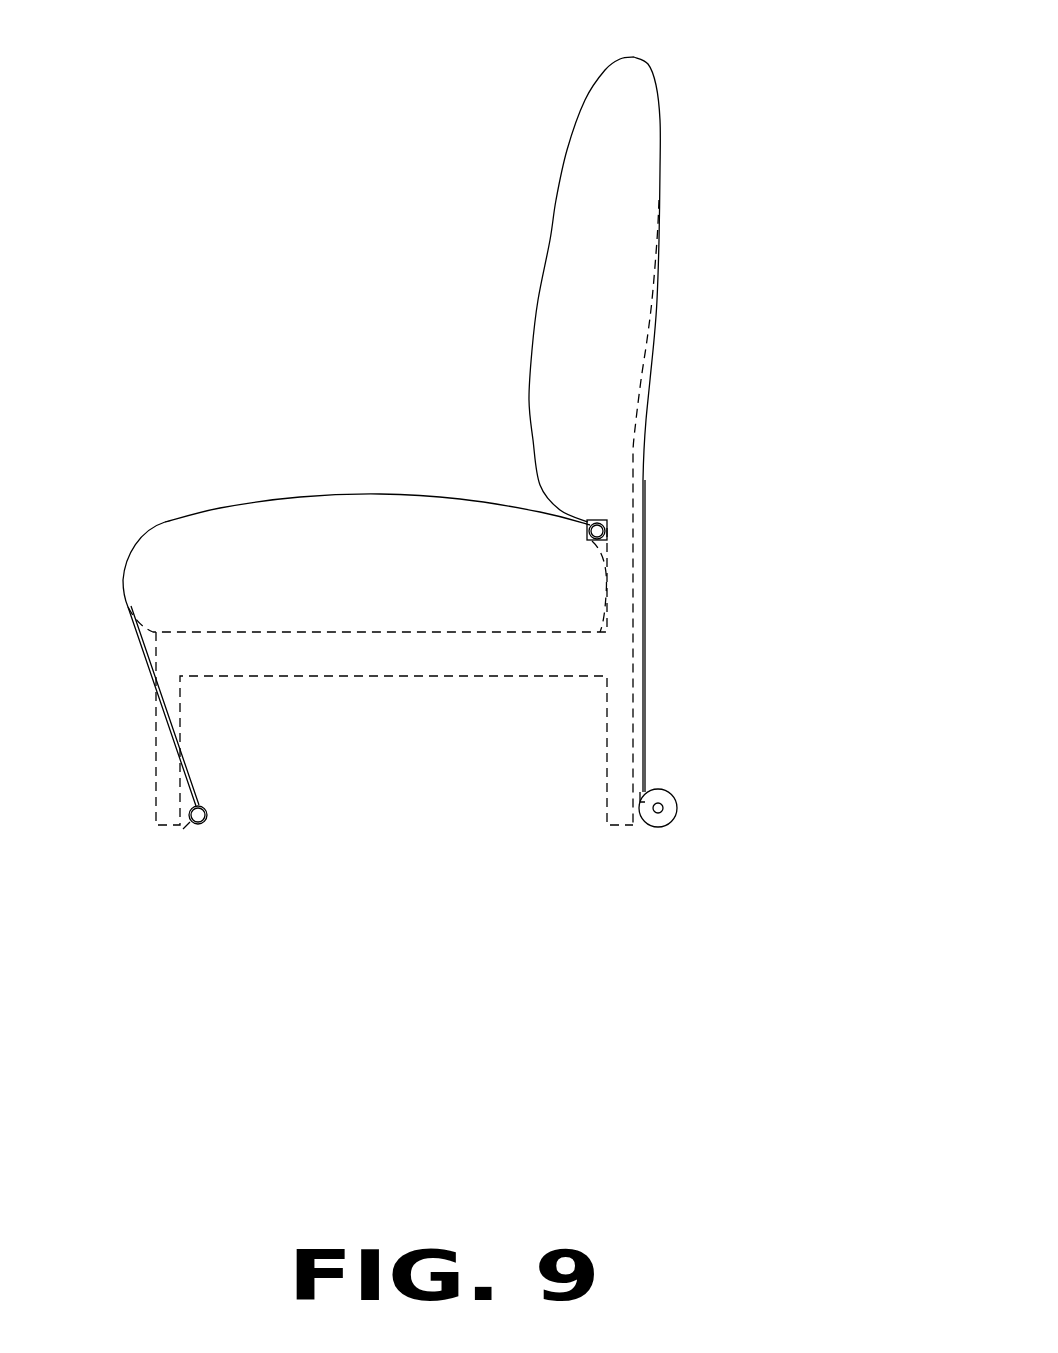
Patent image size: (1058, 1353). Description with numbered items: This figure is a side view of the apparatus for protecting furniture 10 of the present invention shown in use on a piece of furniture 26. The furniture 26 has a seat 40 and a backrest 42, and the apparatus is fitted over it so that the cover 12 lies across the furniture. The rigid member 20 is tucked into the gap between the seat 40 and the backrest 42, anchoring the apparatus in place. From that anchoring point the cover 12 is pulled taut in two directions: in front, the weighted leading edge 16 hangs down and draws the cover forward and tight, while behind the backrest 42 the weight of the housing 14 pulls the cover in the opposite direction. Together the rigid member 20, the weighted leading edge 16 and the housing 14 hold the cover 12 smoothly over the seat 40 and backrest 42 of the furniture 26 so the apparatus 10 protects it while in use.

The apparatus for protecting furniture 10 is at (782, 128).
The cover 12 is at (165, 522).
The housing 14 is at (666, 790).
The weighted leading edge 16 is at (207, 812).
The rigid member 20 is at (590, 525).
The furniture 26 is at (575, 232).
The seat 40 is at (410, 510).
The backrest 42 is at (620, 322).